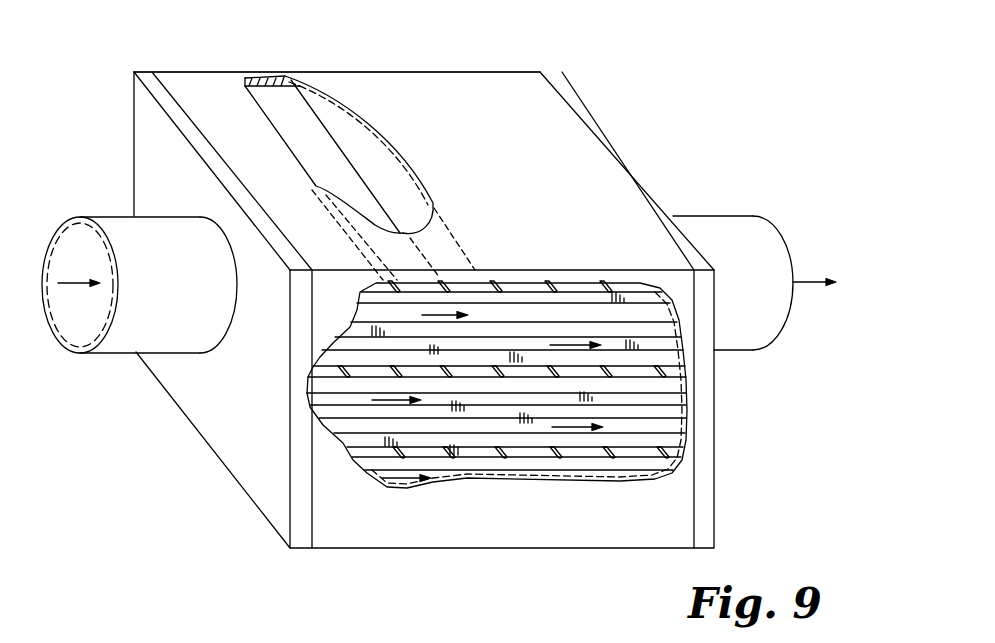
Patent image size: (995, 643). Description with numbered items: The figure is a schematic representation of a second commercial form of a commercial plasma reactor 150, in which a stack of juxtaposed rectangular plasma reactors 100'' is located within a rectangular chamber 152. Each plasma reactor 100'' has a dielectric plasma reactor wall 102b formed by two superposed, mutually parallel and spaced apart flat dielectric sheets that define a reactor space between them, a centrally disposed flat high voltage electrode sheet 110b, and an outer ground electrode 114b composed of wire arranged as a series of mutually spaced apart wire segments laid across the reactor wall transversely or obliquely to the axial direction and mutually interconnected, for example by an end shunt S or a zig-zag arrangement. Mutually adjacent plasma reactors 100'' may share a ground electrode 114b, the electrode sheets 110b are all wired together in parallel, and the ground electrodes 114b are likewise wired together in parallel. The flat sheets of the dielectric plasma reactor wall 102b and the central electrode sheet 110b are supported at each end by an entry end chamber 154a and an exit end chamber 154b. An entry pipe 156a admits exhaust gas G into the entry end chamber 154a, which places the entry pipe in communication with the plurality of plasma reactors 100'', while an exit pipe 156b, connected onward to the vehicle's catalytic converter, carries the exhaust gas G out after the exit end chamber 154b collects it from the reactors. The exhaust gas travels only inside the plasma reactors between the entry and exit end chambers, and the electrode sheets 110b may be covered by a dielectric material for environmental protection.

The commercial plasma reactor 150 is at (637, 123).
The rectangular chamber 152 is at (368, 84).
The entry end chamber 154a is at (147, 80).
The exit end chamber 154b is at (634, 171).
The entry pipe 156a is at (124, 324).
The exit pipe 156b is at (743, 215).
The end shunt S is at (284, 77).
The exhaust gas G is at (72, 282).
The plasma reactor 100'' is at (554, 385).
The dielectric plasma reactor wall 102b is at (350, 293).
The high voltage electrode sheet 110b is at (350, 328).
The ground electrode 114b is at (543, 283).